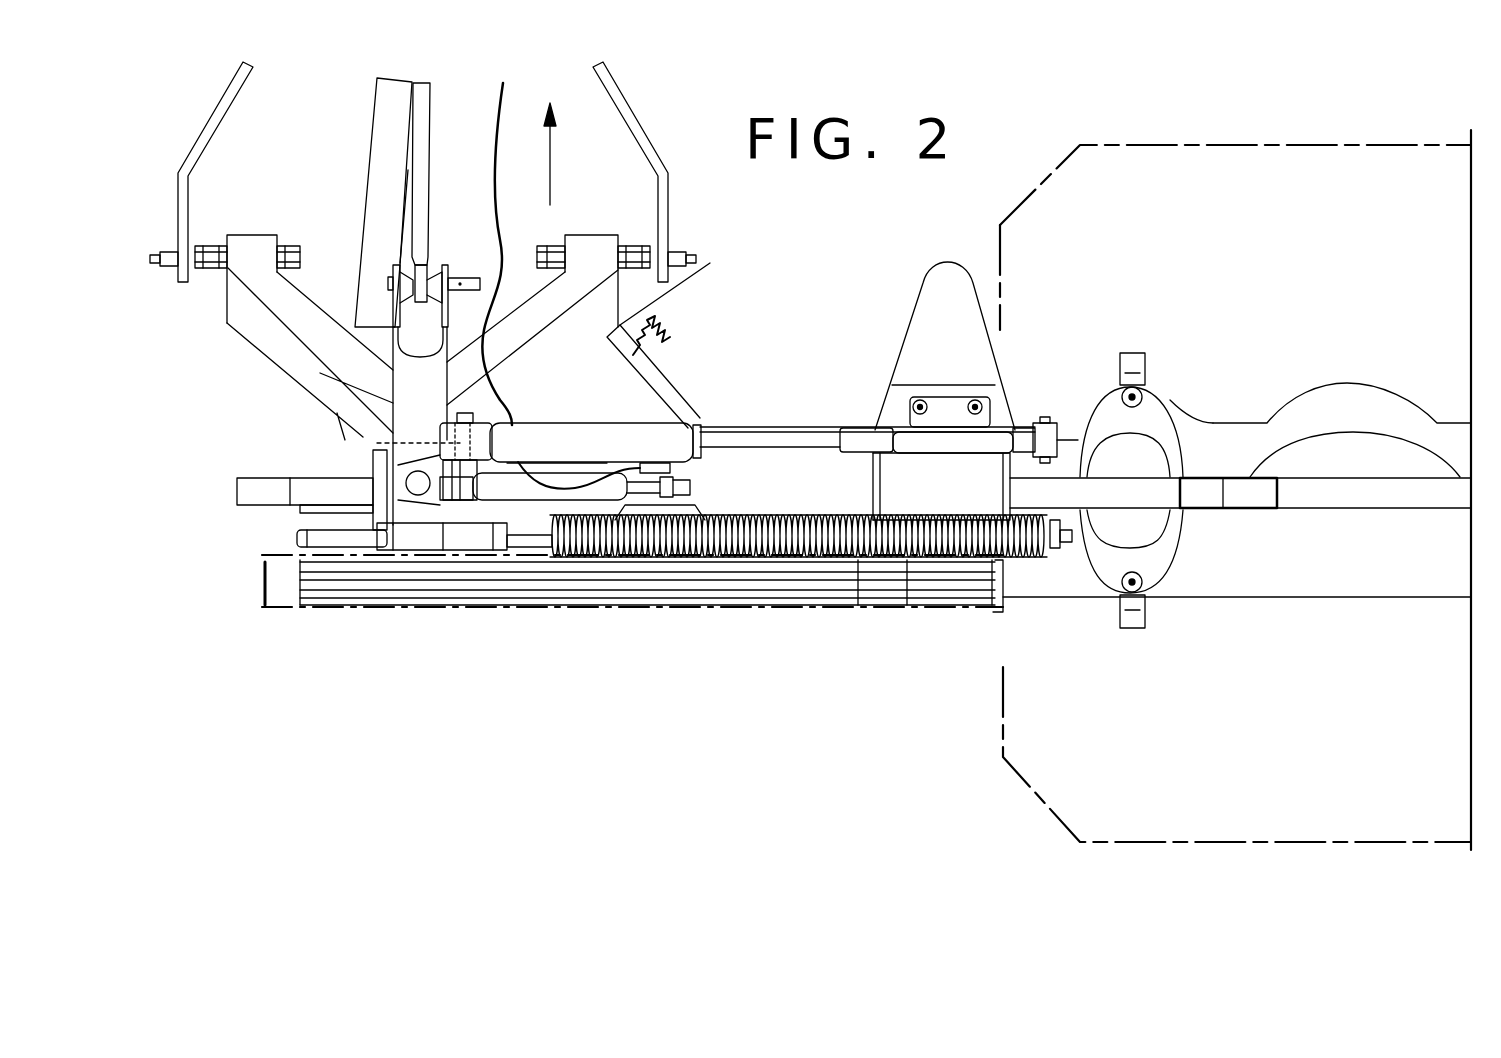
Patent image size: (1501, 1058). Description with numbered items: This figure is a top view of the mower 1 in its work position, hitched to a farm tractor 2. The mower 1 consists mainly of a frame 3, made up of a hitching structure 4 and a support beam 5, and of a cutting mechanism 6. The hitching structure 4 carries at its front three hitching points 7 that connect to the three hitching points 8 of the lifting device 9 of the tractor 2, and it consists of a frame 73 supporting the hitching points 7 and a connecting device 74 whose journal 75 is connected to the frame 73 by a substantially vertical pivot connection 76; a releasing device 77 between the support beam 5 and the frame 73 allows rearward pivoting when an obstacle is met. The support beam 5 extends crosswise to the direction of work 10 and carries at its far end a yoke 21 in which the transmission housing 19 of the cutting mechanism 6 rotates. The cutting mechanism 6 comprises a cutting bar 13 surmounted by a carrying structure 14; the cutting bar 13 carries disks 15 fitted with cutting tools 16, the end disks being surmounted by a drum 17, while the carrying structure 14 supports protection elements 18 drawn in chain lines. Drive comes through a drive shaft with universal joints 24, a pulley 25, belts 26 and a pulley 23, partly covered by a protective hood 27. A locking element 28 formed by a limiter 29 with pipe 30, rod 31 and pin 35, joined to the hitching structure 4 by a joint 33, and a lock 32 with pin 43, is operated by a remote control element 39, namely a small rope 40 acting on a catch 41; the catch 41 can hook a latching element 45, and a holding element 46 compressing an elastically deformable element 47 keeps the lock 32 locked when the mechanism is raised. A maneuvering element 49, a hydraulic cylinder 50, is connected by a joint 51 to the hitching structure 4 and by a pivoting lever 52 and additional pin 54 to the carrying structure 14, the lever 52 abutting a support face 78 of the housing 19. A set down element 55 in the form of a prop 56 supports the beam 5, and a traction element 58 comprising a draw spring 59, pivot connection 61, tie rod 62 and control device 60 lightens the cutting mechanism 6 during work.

The mower 1 is at (818, 243).
The farm tractor 2 is at (207, 147).
The frame 3 is at (835, 427).
The hitching structure 4 is at (245, 333).
The support beam 5 is at (715, 427).
The cutting mechanism 6 is at (1413, 397).
The hitching points 7 is at (160, 255).
The hitching points 8 is at (197, 252).
The lifting device 9 is at (228, 100).
The direction of work 10 is at (550, 177).
The cutting bar 13 is at (1333, 387).
The carrying structure 14 is at (1418, 497).
The disks 15 is at (1170, 417).
The cutting tools 16 is at (1135, 355).
The drum 17 is at (1153, 533).
The protection elements 18 is at (1030, 800).
The transmission housing 19 is at (935, 511).
The yoke 21 is at (858, 427).
The pulley 23 is at (990, 612).
The drive shaft with universal joints 24 is at (372, 178).
The pulley 25 is at (397, 603).
The belts 26 is at (300, 590).
The protective hood 27 is at (310, 610).
The locking element 28 is at (487, 560).
The limiter 29 is at (590, 560).
The pipe 30 is at (620, 560).
The rod 31 is at (657, 563).
The lock 32 is at (690, 492).
The joint 33 is at (353, 483).
The pin 35 is at (517, 533).
The remote control element 39 is at (520, 383).
The small rope 40 is at (500, 383).
The catch 41 is at (735, 430).
The pin 43 is at (647, 450).
The latching element 45 is at (1187, 467).
The holding element 46 is at (1254, 485).
The elastically deformable element 47 is at (873, 492).
The maneuvering element 49 is at (830, 428).
The hydraulic cylinder 50 is at (668, 345).
The joint 51 is at (418, 426).
The pivoting lever 52 is at (1082, 457).
The additional pin 54 is at (1047, 423).
The set down element 55 is at (247, 478).
The prop 56 is at (237, 485).
The traction element 58 is at (703, 567).
The draw spring 59 is at (862, 560).
The control device 60 is at (393, 560).
The pivot connection 61 is at (1067, 543).
The tie rod 62 is at (297, 540).
The frame 73 is at (250, 330).
The connecting device 74 is at (310, 340).
The journal 75 is at (330, 437).
The pivot connection 76 is at (360, 530).
The releasing device 77 is at (705, 270).
The support face 78 is at (1010, 425).